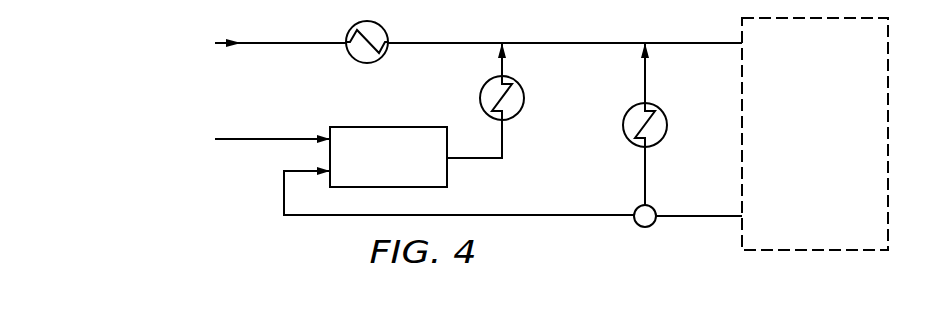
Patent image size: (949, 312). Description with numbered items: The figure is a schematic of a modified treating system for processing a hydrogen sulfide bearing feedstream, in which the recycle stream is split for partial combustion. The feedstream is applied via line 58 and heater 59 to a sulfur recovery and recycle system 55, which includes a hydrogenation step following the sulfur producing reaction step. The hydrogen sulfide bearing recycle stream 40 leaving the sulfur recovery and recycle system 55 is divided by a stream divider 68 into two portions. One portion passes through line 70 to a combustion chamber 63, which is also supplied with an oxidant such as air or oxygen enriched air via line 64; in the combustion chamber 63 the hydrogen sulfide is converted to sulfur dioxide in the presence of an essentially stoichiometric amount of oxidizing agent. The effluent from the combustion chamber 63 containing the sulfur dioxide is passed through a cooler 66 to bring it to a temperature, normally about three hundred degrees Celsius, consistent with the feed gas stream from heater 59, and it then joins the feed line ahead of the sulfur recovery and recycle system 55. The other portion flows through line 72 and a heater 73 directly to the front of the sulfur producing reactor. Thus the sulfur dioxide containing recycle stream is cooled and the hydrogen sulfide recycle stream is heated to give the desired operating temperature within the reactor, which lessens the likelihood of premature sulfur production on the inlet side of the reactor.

The line 58 is at (283, 42).
The heater 59 is at (382, 57).
The combustion chamber 63 is at (379, 127).
The line 64 is at (292, 139).
The cooler 66 is at (517, 113).
The stream divider 68 is at (653, 224).
The line 70 is at (517, 215).
The line 72 is at (648, 181).
The heater 73 is at (667, 127).
The hydrogen sulfide bearing recycle stream 40 is at (695, 215).
The sulfur recovery and recycle system 55 is at (891, 78).